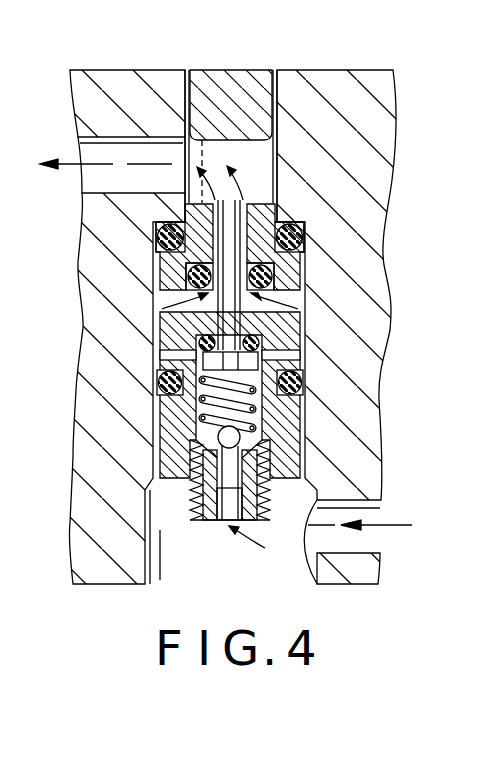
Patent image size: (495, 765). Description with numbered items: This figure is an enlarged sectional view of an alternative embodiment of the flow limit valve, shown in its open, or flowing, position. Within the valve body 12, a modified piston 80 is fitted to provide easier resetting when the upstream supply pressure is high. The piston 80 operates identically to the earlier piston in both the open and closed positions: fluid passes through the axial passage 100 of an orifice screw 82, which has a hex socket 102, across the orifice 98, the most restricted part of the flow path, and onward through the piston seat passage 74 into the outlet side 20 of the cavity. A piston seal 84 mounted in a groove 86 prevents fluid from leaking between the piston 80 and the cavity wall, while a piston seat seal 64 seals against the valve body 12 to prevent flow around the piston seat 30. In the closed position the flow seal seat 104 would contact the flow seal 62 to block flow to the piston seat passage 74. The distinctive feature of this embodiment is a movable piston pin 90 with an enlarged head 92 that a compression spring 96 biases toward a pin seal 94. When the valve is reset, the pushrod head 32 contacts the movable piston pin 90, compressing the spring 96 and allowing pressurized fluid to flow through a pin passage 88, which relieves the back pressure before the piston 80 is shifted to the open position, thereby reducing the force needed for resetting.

The valve body 12 is at (383, 101).
The pushrod head 32 is at (214, 84).
The outlet side 20 is at (257, 150).
The piston seat passage 74 is at (243, 206).
The movable piston pin 90 is at (275, 208).
The piston seat 30 is at (307, 270).
The piston seat seal 64 is at (307, 236).
The flow seal 62 is at (309, 299).
The flow seal seat 104 is at (170, 299).
The pin passage 88 is at (303, 323).
The modified piston 80 is at (305, 424).
The groove 86 is at (292, 353).
The piston seal 84 is at (292, 384).
The pin seal 94 is at (197, 338).
The enlarged head 92 is at (205, 362).
The compression spring 96 is at (200, 392).
The orifice 98 is at (212, 434).
The hex socket 102 is at (232, 508).
The axial passage 100 is at (191, 507).
The orifice screw 82 is at (275, 506).